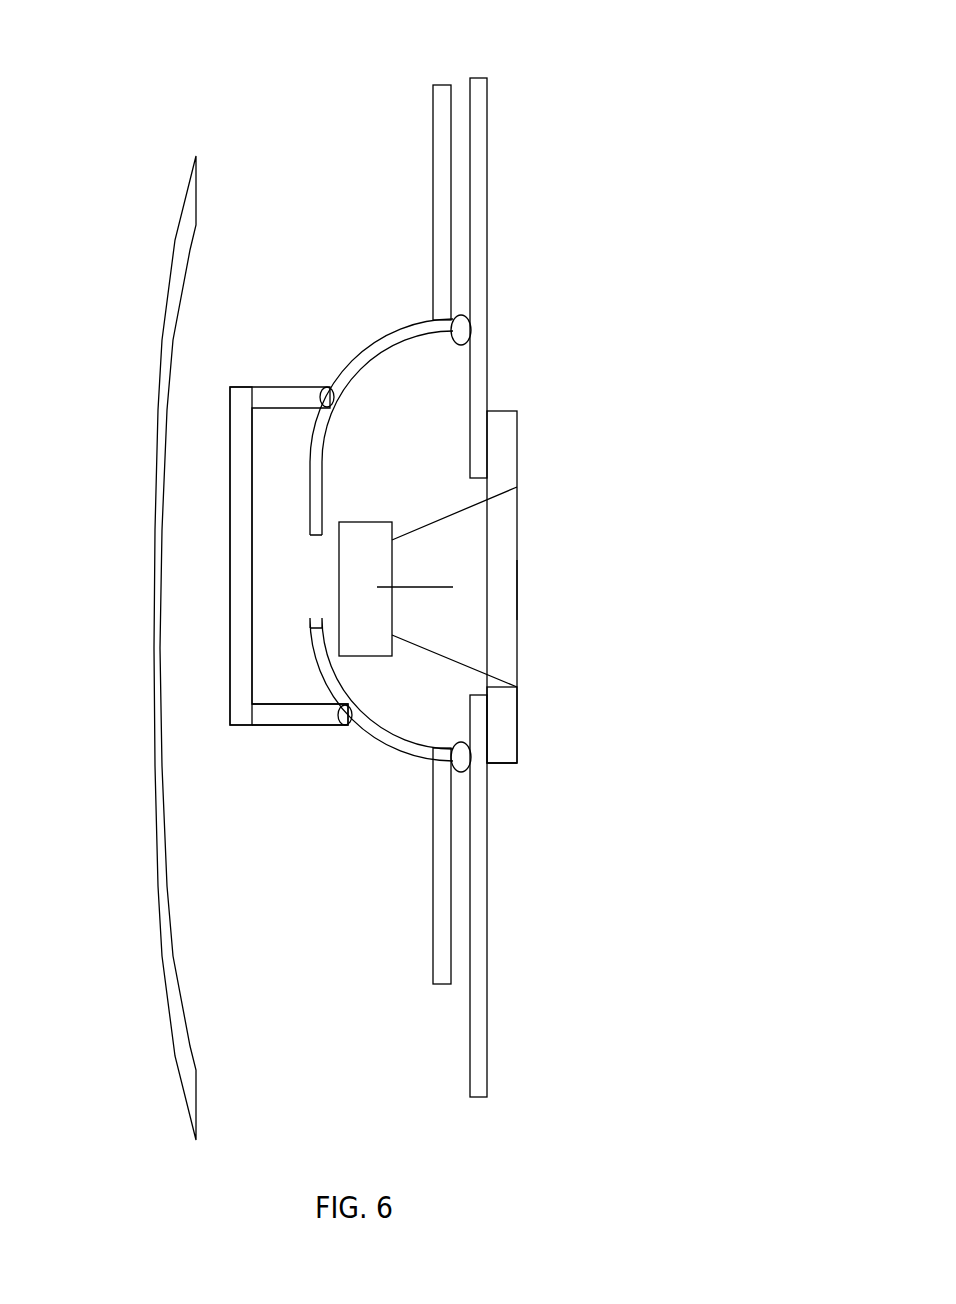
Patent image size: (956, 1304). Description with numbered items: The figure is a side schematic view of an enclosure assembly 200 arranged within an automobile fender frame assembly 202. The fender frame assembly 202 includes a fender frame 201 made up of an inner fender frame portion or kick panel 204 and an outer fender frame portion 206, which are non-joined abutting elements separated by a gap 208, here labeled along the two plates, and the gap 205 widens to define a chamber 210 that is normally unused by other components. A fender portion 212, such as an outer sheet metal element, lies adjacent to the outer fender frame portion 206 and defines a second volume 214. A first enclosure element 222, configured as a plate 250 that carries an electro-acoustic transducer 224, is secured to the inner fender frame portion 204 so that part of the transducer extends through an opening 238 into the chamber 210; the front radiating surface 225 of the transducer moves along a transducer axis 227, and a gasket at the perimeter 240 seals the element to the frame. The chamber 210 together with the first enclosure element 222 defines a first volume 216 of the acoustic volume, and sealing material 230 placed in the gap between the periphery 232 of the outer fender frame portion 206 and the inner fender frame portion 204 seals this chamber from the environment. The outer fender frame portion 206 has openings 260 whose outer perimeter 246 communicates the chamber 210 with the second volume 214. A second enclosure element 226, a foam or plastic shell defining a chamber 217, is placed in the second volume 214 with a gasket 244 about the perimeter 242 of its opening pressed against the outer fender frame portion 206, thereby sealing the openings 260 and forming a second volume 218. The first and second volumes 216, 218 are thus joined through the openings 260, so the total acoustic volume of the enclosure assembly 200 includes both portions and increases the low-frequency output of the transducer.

The enclosure assembly 200 is at (300, 113).
The fender frame 201 is at (496, 181).
The automobile fender frame assembly 202 is at (611, 135).
The inner fender frame portion 204 is at (487, 385).
The gap 205 is at (461, 81).
The outer fender frame portion 206 is at (370, 338).
The plate gap 208 is at (458, 251).
The chamber 210 is at (385, 699).
The fender portion 212 is at (175, 237).
The second volume 214 is at (244, 847).
The first volume 216 is at (413, 489).
The chamber 217 is at (262, 597).
The second volume 218 is at (298, 456).
The first enclosure element 222 is at (524, 743).
The electro-acoustic transducer 224 is at (517, 512).
The front radiating surface 225 is at (524, 591).
The second enclosure element 226 is at (258, 718).
The transducer axis 227 is at (423, 590).
The sealing material 230 is at (461, 330).
The periphery 232 is at (439, 318).
The opening 238 is at (469, 684).
The perimeter 240 is at (517, 442).
The perimeter 242 is at (319, 376).
The gasket 244 is at (320, 395).
The outer perimeter 246 is at (347, 398).
The plate 250 is at (512, 769).
The openings 260 is at (311, 562).